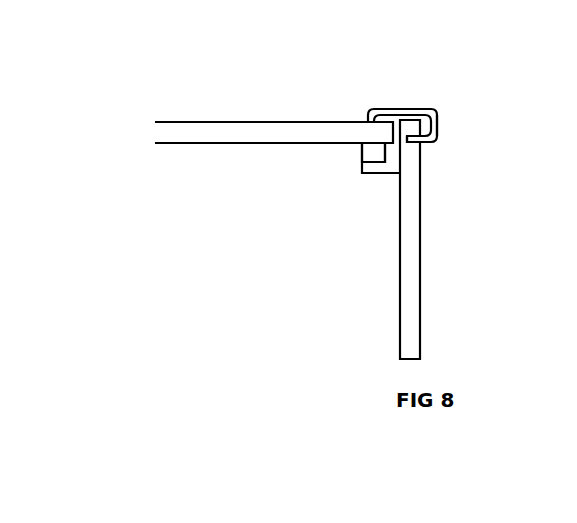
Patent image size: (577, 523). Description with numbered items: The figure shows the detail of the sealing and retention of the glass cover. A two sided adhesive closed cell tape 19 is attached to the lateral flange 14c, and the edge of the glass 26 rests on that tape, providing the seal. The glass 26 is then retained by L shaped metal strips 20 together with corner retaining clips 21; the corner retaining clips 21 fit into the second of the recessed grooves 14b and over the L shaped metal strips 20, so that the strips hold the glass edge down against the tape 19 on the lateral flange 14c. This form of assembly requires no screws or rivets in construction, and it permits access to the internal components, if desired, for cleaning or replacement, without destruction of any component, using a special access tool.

The glass 26 is at (237, 113).
The second of the recessed grooves 14b is at (433, 152).
The corner retaining clips 21 is at (428, 98).
The L shaped metal strips 20 is at (442, 130).
The lateral flange 14c is at (375, 177).
The two sided adhesive closed cell tape 19 is at (355, 160).